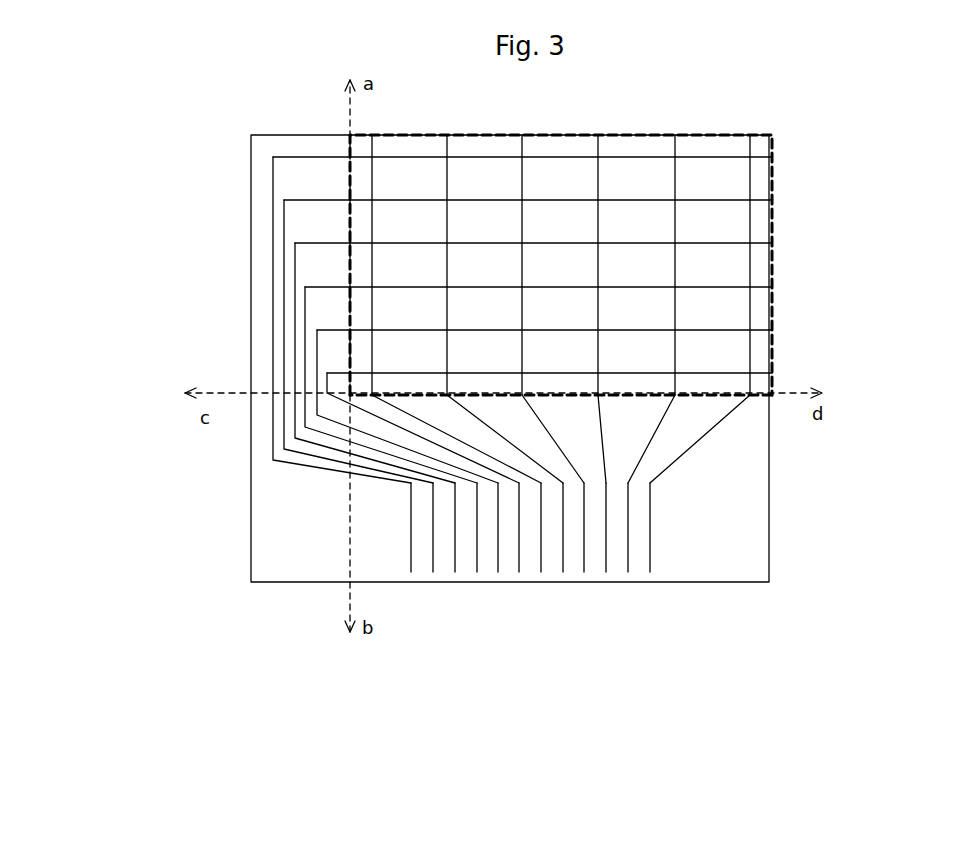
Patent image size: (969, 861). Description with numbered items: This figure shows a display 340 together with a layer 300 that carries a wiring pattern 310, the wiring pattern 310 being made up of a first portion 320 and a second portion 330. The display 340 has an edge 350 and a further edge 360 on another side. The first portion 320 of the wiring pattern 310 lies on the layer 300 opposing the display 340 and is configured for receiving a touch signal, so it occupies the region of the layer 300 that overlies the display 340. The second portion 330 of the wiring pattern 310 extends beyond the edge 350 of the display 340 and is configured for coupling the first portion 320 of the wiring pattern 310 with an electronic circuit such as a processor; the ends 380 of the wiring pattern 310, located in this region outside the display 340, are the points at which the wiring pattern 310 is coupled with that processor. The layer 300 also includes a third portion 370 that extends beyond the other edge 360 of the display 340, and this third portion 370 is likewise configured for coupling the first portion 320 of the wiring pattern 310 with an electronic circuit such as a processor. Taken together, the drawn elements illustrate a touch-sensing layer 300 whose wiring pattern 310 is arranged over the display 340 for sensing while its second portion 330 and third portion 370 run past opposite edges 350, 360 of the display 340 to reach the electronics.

The layer 300 is at (767, 565).
The wiring pattern 310 is at (725, 418).
The first portion 320 is at (598, 183).
The second portion 330 is at (298, 157).
The display 340 is at (772, 243).
The edge 350 is at (348, 209).
The edge 360 is at (633, 398).
The third portion 370 is at (403, 482).
The ends 380 is at (520, 573).